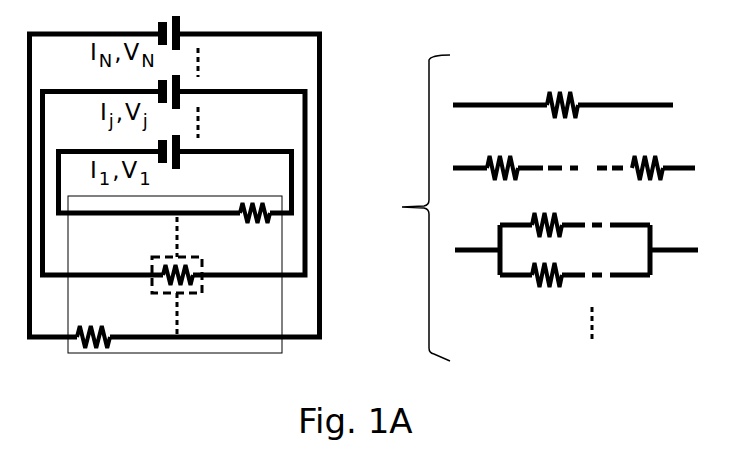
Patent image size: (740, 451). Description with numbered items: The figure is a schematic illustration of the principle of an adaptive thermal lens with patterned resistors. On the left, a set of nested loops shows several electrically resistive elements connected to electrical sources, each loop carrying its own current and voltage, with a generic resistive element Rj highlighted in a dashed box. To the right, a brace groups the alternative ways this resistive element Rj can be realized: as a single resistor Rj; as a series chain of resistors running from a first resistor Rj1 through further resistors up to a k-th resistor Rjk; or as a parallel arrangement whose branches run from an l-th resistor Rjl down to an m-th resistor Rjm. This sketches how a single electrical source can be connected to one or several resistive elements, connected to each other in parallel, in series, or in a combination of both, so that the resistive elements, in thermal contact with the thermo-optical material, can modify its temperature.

The resistance of j-th cell Rj is at (392, 258).
The first series resistance component of Rj Rj1 is at (501, 151).
The k-th series resistance component of Rj Rjk is at (645, 151).
The l-th parallel resistance component of Rj Rjl is at (575, 209).
The m-th parallel resistance component of Rj Rjm is at (575, 293).